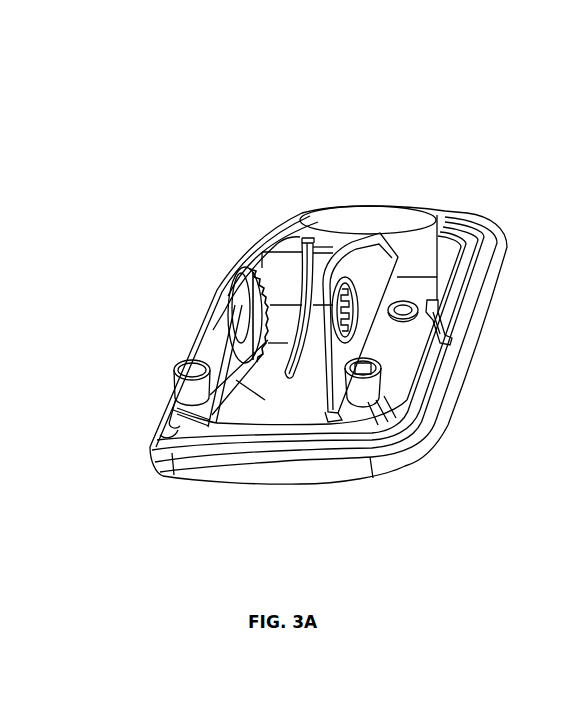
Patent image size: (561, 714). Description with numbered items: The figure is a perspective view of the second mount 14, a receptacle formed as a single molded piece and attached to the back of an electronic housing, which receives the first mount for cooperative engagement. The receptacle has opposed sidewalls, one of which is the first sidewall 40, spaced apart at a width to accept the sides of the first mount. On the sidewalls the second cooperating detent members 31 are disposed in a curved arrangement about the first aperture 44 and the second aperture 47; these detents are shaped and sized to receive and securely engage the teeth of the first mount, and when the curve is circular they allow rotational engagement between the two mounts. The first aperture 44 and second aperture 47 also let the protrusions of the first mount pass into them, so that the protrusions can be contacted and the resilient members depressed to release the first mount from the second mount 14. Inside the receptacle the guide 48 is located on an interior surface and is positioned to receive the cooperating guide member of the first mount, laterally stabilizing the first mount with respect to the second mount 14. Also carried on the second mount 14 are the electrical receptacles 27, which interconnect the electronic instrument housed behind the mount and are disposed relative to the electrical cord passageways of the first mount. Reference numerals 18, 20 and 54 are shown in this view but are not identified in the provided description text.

The second mount 14 is at (338, 235).
The housing side walls 18 is at (300, 273).
The housing 20 is at (483, 222).
The electrical receptacles 27 is at (377, 387).
The second cooperating detent members 31 is at (263, 345).
The first sidewall 40 is at (247, 268).
The first aperture 44 is at (348, 292).
The second aperture 47 is at (237, 307).
The guide 48 is at (310, 243).
The support post 54 is at (232, 348).